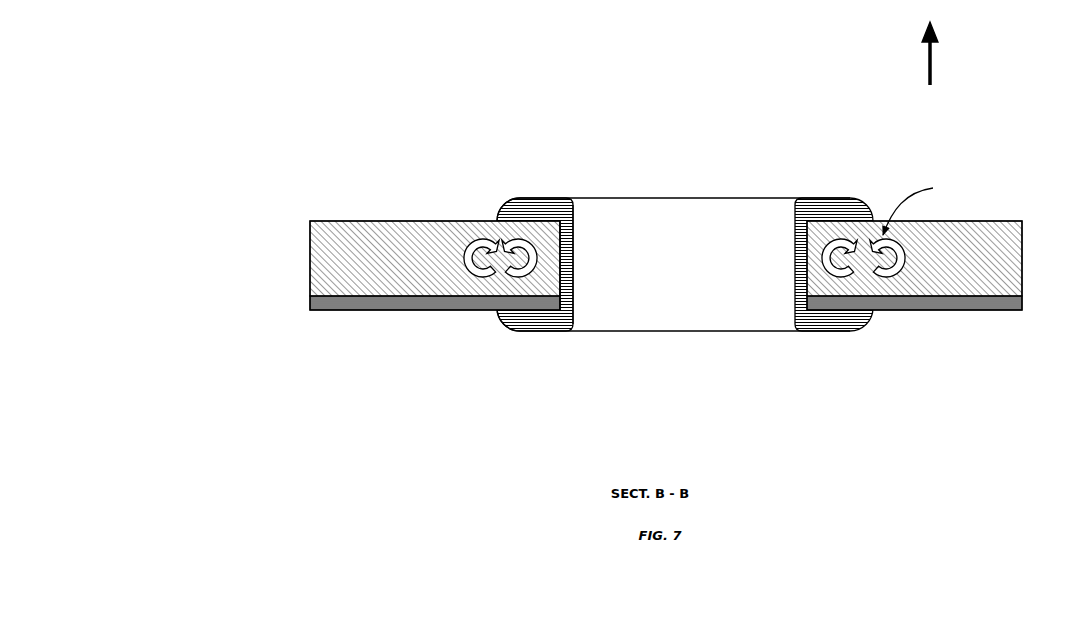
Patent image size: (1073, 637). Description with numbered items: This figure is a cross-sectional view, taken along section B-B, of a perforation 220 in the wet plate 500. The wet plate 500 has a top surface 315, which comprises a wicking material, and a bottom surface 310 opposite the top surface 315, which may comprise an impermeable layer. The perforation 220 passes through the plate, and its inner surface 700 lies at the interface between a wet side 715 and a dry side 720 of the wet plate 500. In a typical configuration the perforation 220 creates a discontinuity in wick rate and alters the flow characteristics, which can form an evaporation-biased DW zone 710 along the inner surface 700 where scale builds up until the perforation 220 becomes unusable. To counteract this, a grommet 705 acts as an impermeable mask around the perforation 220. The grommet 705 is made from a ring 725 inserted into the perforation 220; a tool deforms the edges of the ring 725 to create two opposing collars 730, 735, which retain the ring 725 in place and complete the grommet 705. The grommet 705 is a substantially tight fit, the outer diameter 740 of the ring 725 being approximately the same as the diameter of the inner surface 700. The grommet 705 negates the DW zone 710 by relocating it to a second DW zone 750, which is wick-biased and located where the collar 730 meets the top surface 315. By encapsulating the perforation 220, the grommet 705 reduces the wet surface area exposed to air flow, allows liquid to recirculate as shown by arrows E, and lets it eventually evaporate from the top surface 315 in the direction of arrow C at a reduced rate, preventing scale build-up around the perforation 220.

The wet plate 500 is at (625, 235).
The perforation 220 is at (728, 238).
The grommet 705 is at (538, 205).
The second DW zone 750 is at (490, 218).
The ring 725 is at (578, 239).
The collar 735 is at (530, 325).
The collar 730 is at (830, 202).
The top surface 315 is at (333, 259).
The bottom surface 310 is at (401, 311).
The wet side 715 is at (1004, 160).
The dry side 720 is at (995, 367).
The outer diameter 740 is at (557, 252).
The DW zone 710 is at (552, 288).
The inner surface 700 is at (815, 275).